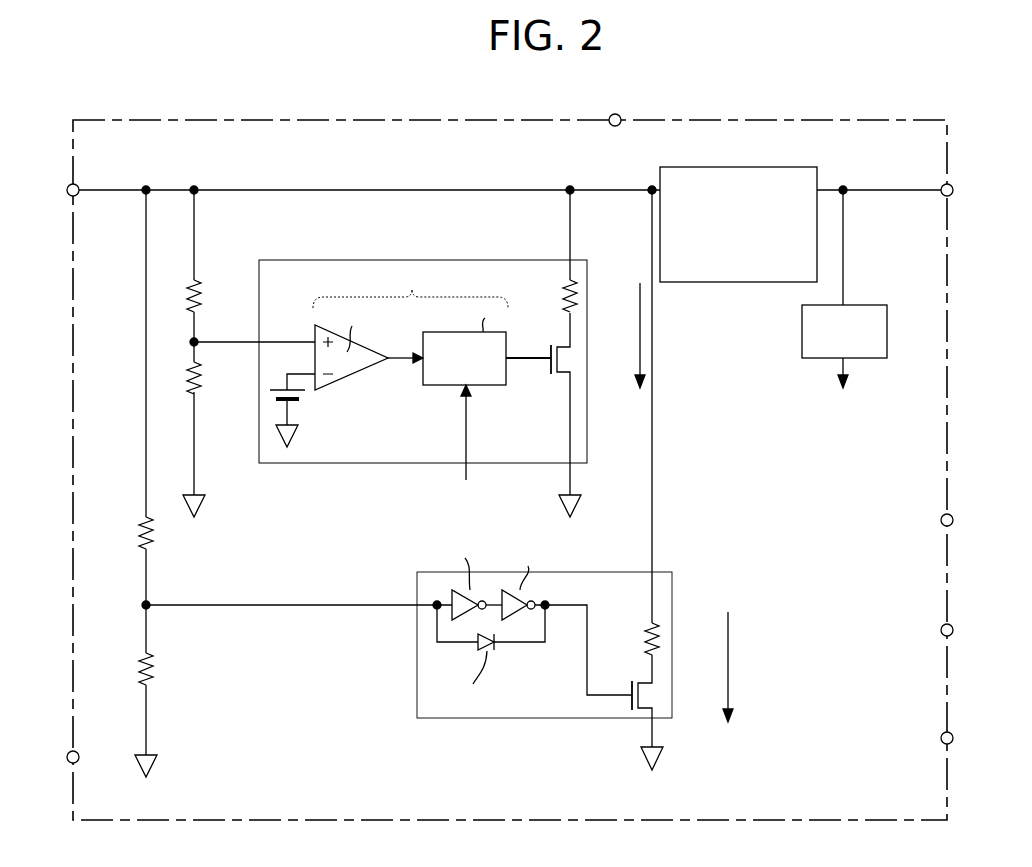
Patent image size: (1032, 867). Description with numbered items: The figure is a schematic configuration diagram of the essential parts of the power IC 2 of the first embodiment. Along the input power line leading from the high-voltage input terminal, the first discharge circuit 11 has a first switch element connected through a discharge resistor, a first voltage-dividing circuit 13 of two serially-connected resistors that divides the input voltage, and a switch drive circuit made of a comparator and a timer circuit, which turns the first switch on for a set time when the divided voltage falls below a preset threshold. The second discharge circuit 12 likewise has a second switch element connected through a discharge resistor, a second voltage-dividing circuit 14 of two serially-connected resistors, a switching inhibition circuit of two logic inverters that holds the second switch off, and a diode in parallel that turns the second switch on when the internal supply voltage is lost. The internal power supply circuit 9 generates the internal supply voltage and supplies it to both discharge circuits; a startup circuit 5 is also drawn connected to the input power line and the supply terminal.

The power IC 2 is at (916, 297).
The startup circuit 5 is at (783, 176).
The internal power supply circuit 9 is at (807, 359).
The first discharge circuit 11 is at (460, 265).
The second discharge circuit 12 is at (522, 700).
The first voltage-dividing circuit 13 is at (205, 277).
The second voltage-dividing circuit 14 is at (121, 586).